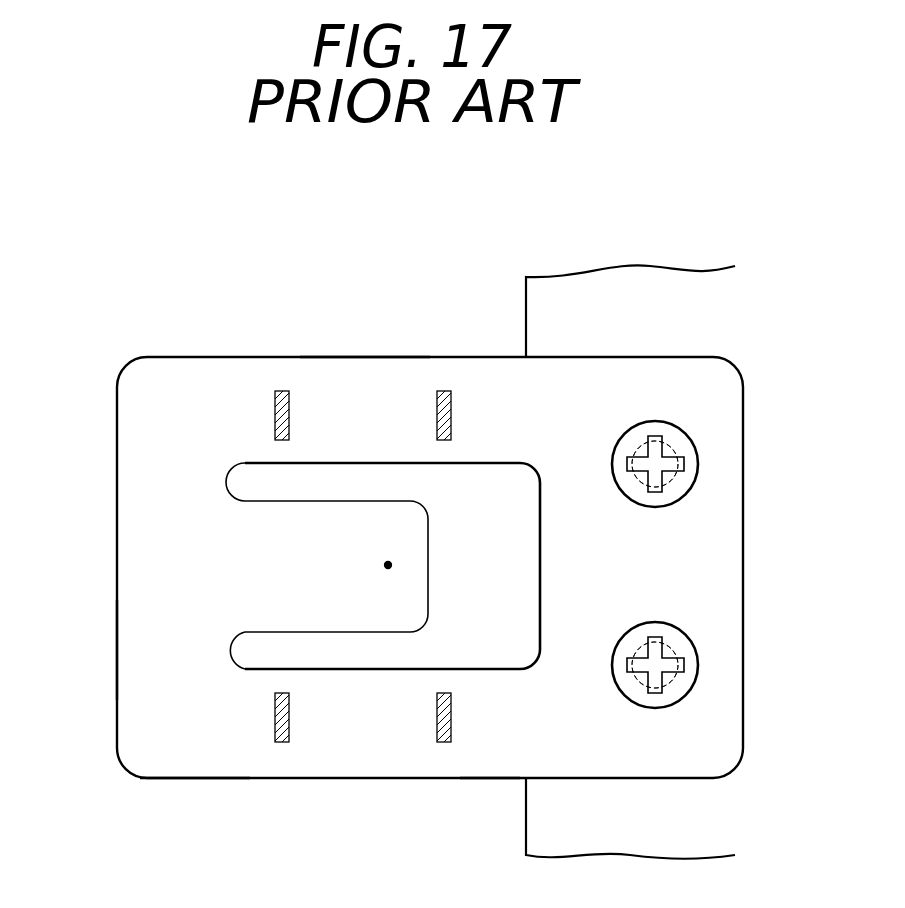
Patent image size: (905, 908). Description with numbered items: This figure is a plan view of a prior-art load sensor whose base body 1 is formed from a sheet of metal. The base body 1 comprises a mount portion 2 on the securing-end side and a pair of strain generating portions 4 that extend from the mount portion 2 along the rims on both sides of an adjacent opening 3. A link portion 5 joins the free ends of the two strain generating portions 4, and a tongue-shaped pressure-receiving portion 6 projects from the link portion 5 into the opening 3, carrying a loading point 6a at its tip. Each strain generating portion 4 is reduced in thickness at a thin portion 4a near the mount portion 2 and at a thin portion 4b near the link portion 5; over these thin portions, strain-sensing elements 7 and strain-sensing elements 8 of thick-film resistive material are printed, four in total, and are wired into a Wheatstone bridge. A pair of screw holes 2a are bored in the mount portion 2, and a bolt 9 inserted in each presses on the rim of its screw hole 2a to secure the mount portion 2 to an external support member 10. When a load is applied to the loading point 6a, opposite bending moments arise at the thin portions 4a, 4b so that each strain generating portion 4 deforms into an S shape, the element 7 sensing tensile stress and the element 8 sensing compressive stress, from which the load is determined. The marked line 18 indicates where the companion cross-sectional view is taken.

The base body 1 is at (466, 522).
The mount portion 2 is at (700, 550).
The screw holes 2a is at (672, 445).
The opening 3 is at (503, 668).
The strain generating portions 4 is at (393, 382).
The thin portion near mount portion 4a is at (490, 743).
The thin portion near link portion 4b is at (218, 735).
The link portion 5 is at (128, 678).
The pressure-receiving portion 6 is at (320, 500).
The loading point 6a is at (387, 570).
The strain-sensing elements 7 is at (449, 405).
The strain-sensing elements 8 is at (283, 390).
The bolt 9 is at (698, 465).
The external support member 10 is at (592, 282).
The section line 18— 18 is at (86, 565).